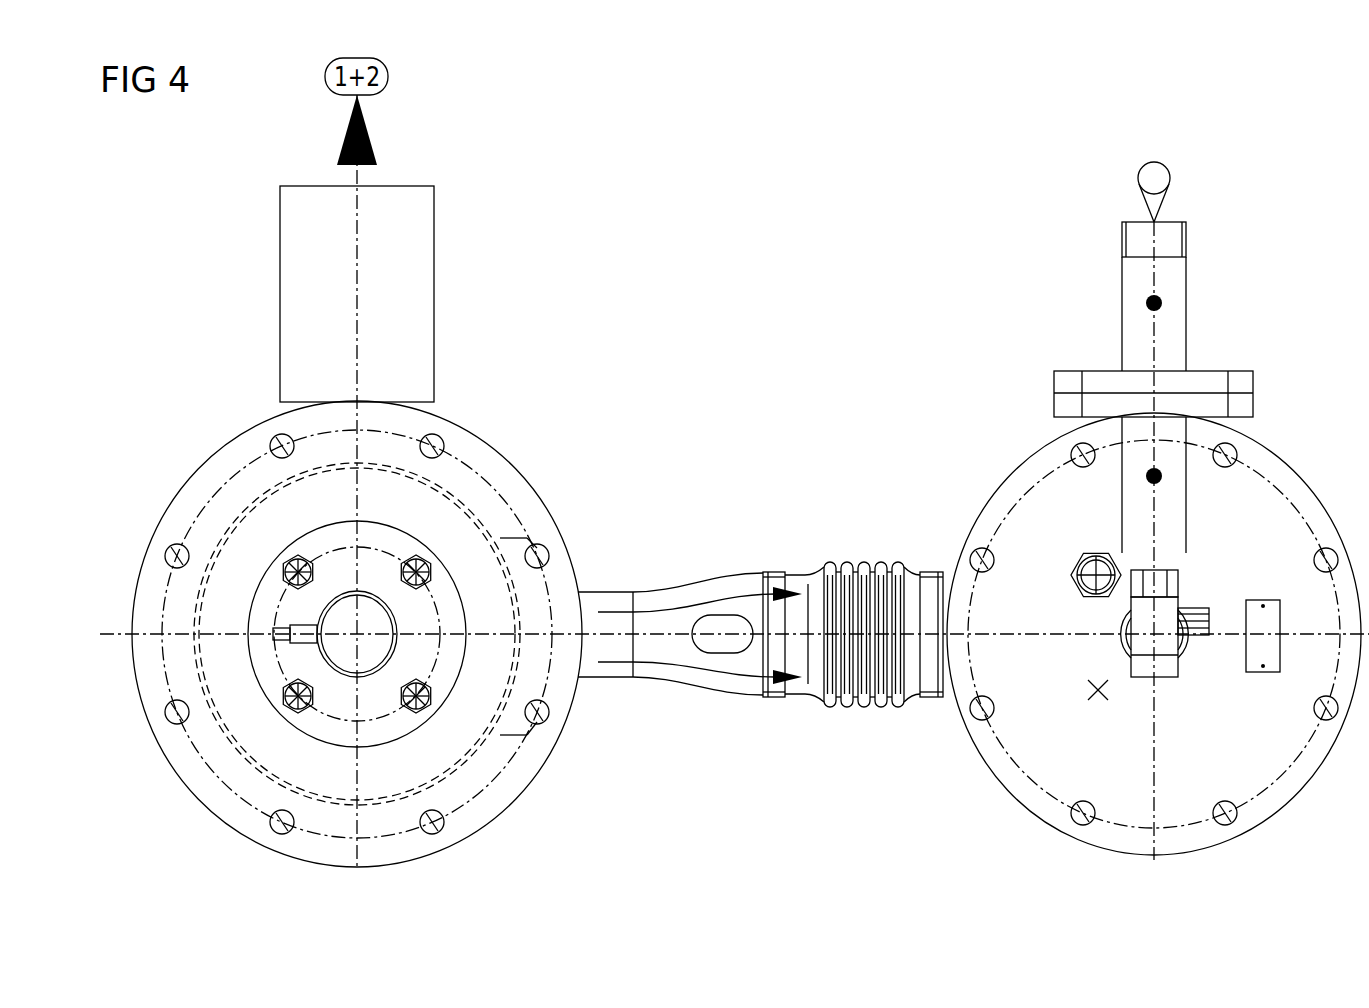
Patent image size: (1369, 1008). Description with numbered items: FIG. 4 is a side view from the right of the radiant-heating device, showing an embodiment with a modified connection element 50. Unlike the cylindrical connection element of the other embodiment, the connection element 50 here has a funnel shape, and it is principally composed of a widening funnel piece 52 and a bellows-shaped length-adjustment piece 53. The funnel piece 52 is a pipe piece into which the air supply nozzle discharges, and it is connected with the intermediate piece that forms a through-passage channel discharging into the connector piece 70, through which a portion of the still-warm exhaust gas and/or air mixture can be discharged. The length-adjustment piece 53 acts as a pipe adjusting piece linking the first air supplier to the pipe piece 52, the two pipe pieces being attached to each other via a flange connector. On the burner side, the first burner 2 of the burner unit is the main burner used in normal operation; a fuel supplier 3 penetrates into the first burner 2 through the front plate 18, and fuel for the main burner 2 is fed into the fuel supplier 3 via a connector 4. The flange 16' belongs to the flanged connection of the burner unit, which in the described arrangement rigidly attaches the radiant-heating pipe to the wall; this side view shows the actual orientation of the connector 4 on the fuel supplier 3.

The connector piece 70 is at (434, 283).
The flange 16' is at (357, 634).
The connection element 50 is at (806, 538).
The funnel piece 52 is at (680, 678).
The length-adjustment piece 53 is at (881, 565).
The front plate 18 is at (1277, 494).
The fuel supplier 3 is at (1180, 283).
The connector 4 is at (1177, 228).
The first burner 2 is at (1154, 192).